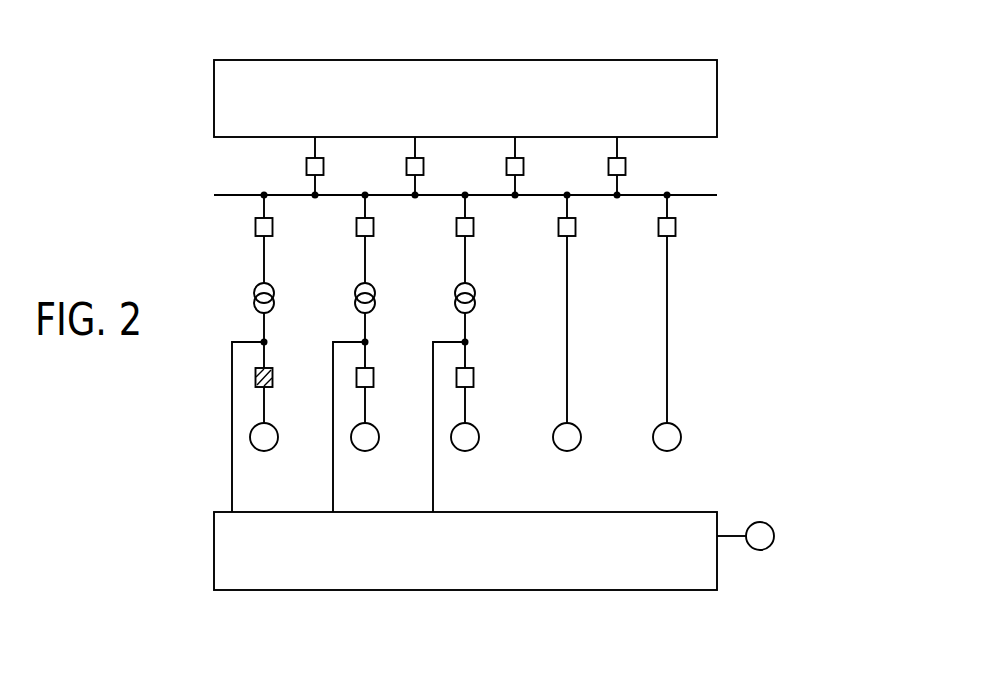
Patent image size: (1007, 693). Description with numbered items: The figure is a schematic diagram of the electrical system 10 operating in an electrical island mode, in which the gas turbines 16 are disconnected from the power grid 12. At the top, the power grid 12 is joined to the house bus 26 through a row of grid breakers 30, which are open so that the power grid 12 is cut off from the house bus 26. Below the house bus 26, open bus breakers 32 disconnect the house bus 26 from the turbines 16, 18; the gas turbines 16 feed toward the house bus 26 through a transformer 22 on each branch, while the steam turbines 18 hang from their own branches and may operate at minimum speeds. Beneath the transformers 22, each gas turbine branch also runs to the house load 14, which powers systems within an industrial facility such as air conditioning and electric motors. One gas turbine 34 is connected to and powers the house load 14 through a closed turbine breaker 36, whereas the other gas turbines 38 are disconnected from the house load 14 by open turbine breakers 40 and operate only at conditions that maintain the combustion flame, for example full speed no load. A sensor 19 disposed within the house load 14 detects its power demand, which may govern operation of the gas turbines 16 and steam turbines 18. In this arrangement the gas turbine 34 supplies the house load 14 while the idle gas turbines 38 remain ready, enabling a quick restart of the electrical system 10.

The electrical system 10 is at (724, 33).
The power grid 12 is at (717, 100).
The house load 14 is at (592, 590).
The gas turbine 16 is at (281, 447).
The steam turbine 18 is at (569, 451).
The sensor 19 is at (763, 550).
The transformer 22 is at (257, 287).
The house bus 26 is at (705, 195).
The grid breaker 30 is at (306, 165).
The bus breaker 32 is at (255, 228).
The gas turbine 34 is at (267, 451).
The turbine breaker 36 is at (272, 376).
The gas turbine 38 is at (368, 451).
The turbine breaker 40 is at (373, 376).